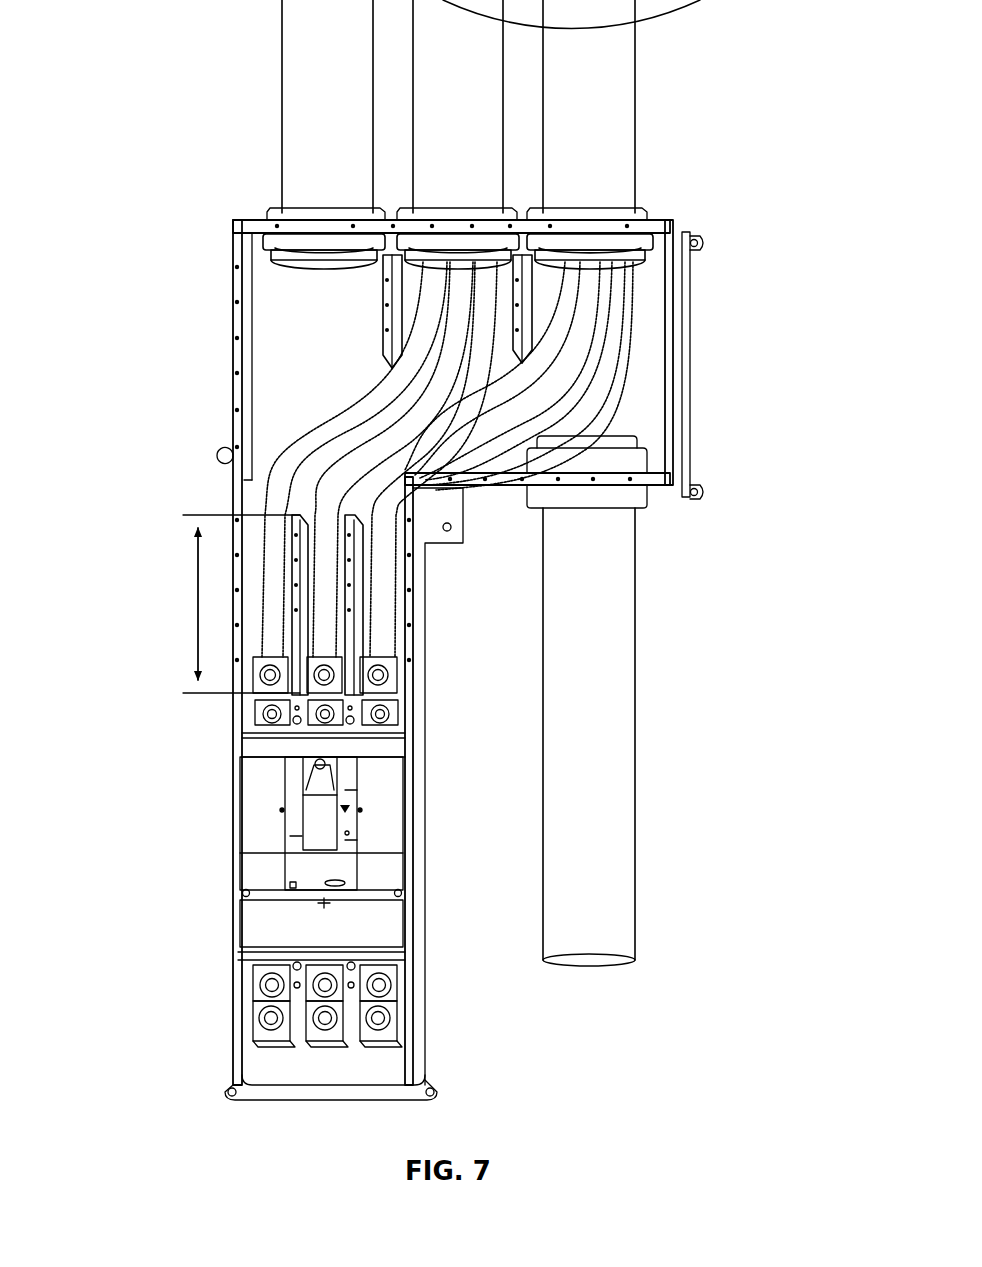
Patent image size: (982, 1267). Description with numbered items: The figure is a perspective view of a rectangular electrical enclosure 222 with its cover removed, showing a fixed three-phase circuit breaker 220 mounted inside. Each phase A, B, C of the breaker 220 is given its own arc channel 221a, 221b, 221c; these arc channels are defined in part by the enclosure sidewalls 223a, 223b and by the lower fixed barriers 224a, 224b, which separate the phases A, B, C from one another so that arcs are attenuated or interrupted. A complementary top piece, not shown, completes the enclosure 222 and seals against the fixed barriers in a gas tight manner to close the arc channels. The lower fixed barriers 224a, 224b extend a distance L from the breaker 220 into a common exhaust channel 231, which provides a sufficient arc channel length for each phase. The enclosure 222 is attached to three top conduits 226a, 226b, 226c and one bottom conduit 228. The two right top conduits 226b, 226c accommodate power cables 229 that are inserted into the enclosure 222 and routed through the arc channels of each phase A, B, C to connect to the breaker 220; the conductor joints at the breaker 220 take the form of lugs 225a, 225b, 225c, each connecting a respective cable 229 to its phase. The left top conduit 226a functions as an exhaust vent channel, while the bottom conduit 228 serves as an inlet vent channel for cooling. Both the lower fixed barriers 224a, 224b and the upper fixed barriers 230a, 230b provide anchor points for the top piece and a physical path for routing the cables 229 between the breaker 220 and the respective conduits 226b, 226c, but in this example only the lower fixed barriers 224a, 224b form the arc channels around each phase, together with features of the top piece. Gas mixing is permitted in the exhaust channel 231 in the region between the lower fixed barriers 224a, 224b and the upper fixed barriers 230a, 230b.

The three-phase circuit breaker 220 is at (260, 929).
The arc channel 221a is at (277, 503).
The arc channel 221b is at (335, 501).
The arc channel 221c is at (400, 400).
The electrical enclosure 222 is at (233, 308).
The enclosure sidewall 223a is at (235, 398).
The enclosure sidewall 223b is at (412, 575).
The lower fixed barrier 224a is at (295, 556).
The lower fixed barrier 224b is at (352, 607).
The lug 225a is at (262, 681).
The lug 225b is at (336, 653).
The lug 225c is at (392, 678).
The left top conduit 226a is at (318, 70).
The right top conduit 226b is at (452, 135).
The right top conduit 226c is at (602, 87).
The bottom conduit 228 is at (602, 788).
The power cables 229 is at (625, 356).
The upper fixed barrier 230a is at (385, 316).
The upper fixed barrier 230b is at (533, 310).
The common exhaust channel 231 is at (283, 397).
The phase A is at (270, 724).
The phase B is at (346, 724).
The phase C is at (396, 728).
The distance L is at (241, 604).